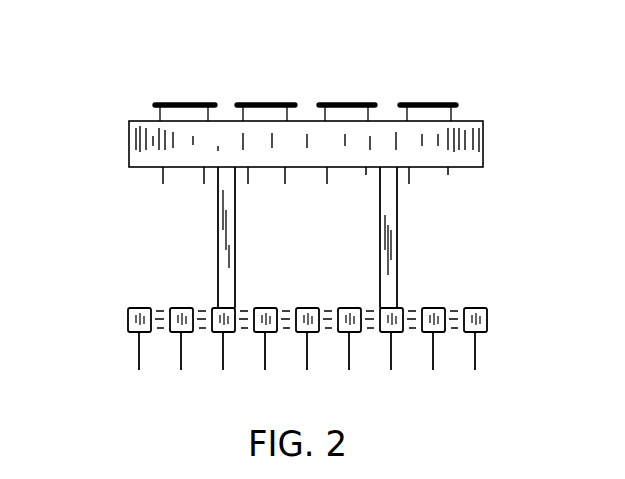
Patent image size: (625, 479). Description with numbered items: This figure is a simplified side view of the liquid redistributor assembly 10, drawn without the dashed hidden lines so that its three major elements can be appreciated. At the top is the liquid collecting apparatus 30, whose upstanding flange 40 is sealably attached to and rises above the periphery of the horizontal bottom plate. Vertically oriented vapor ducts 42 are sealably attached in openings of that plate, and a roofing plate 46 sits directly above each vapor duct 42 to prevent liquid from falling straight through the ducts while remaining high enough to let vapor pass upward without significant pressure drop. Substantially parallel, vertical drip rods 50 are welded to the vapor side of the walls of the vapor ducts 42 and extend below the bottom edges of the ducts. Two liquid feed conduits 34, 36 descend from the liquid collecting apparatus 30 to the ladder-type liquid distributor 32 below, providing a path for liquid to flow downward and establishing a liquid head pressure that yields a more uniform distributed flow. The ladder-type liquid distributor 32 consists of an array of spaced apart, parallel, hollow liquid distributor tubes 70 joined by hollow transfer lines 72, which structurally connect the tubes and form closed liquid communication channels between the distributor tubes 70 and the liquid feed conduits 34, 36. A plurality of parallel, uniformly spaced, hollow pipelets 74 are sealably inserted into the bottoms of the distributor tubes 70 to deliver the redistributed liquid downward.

The liquid redistributor assembly 10 is at (320, 34).
The liquid collecting apparatus 30 is at (127, 106).
The upstanding flange 40 is at (129, 157).
The roofing plates 46 is at (250, 103).
The vapor duct 42 is at (368, 113).
The drip rods 50 is at (366, 172).
The liquid feed conduit 34 is at (218, 232).
The liquid feed conduit 36 is at (398, 235).
The ladder-type liquid distributor 32 is at (128, 301).
The liquid distributor tubes 70 is at (431, 307).
The transfer lines 72 is at (245, 306).
The pipelets 74 is at (266, 360).